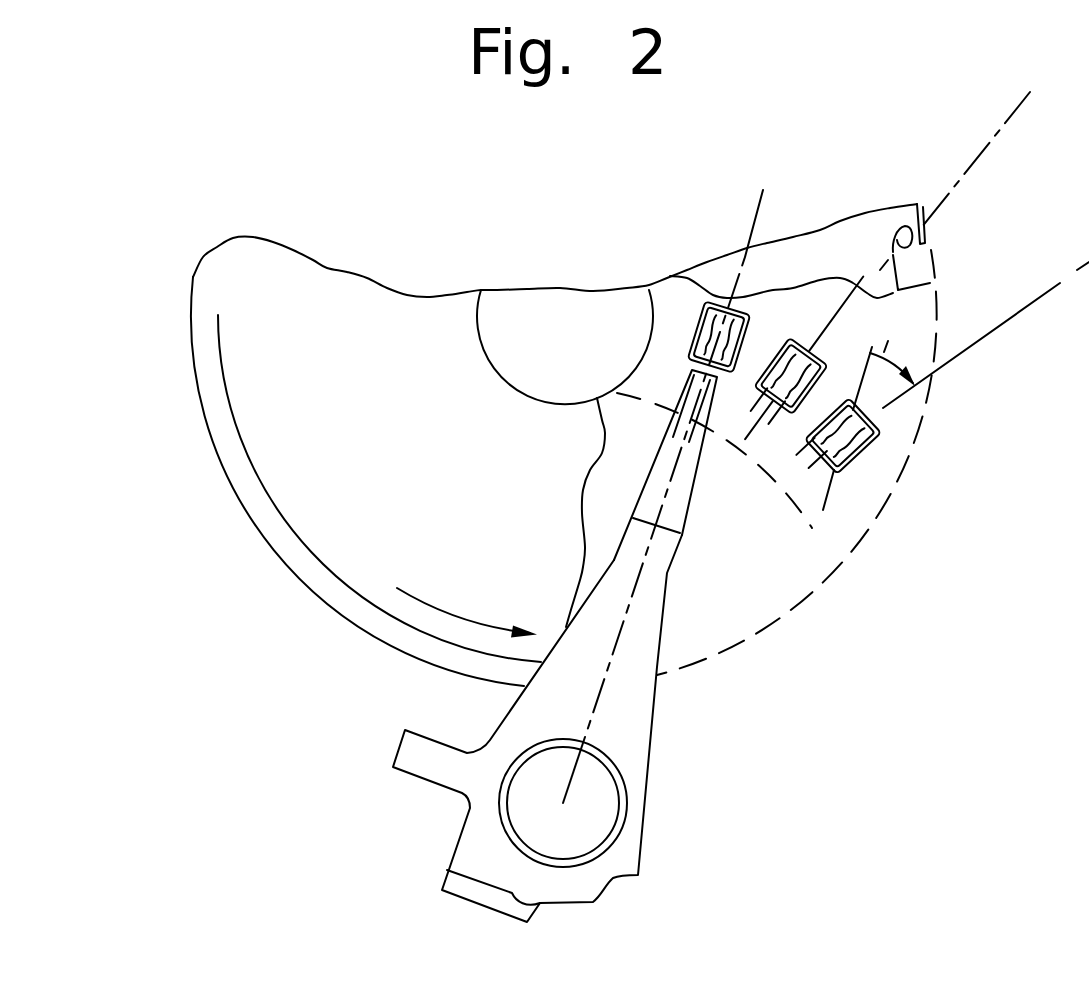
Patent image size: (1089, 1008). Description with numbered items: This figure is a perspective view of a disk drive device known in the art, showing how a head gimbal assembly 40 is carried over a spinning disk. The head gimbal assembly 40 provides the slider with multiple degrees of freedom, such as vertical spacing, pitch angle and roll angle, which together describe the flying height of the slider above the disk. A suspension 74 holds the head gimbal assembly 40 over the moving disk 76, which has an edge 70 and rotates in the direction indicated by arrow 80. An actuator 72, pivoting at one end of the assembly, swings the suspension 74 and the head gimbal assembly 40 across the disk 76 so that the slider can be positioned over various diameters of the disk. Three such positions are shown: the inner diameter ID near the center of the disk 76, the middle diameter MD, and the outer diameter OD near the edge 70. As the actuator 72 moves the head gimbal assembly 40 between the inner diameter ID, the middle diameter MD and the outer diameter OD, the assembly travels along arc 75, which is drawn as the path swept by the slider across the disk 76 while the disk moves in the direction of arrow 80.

The head gimbal assembly 40 is at (752, 300).
The edge 70 is at (291, 577).
The actuator 72 is at (646, 840).
The suspension 74 is at (687, 506).
The arc 75 is at (800, 509).
The disk 76 is at (392, 467).
The arrow 80 is at (467, 617).
The inner diameter ID is at (714, 300).
The middle diameter MD is at (800, 349).
The outer diameter OD is at (928, 413).